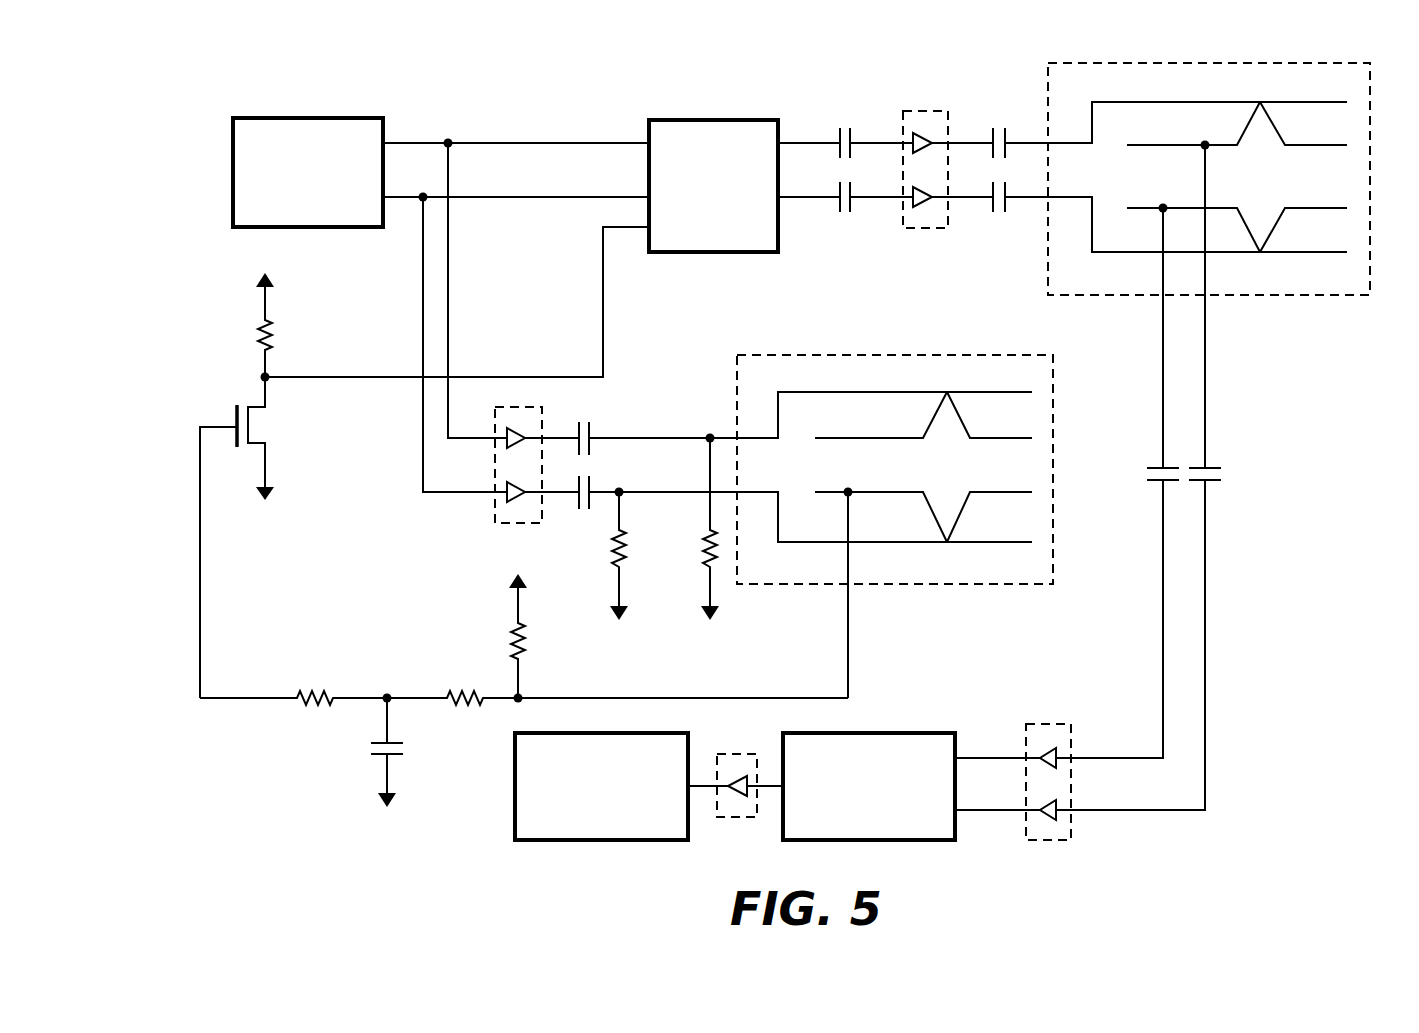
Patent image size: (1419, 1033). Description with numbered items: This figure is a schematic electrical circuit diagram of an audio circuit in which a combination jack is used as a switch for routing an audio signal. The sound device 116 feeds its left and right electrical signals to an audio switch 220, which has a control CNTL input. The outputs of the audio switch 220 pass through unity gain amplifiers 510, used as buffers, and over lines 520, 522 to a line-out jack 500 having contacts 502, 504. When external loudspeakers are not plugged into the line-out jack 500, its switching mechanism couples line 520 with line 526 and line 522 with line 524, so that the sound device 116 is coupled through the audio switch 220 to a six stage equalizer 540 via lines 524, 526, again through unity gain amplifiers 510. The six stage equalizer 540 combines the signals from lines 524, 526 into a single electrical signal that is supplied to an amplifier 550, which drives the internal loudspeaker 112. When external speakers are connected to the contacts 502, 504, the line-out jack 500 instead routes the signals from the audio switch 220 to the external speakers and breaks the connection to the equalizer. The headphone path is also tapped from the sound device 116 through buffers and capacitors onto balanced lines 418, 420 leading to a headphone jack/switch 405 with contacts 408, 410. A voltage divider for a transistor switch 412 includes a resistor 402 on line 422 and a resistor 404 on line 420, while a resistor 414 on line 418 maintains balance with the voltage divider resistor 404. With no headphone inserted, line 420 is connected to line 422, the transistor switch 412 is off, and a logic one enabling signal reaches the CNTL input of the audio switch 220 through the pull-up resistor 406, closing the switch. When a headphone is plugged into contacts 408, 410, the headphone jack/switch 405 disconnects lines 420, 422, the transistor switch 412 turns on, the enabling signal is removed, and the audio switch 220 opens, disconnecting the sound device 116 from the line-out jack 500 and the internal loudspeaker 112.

The sound device 116 is at (372, 118).
The audio switch 220 is at (750, 120).
The unity gain amplifiers 510 is at (925, 111).
The line 520 is at (978, 136).
The line 522 is at (977, 202).
The line-out jack 500 is at (1233, 199).
The contact 502 is at (1347, 100).
The contact 504 is at (1347, 252).
The line 524 is at (1160, 428).
The line 526 is at (1207, 443).
The pull-up resistor 406 is at (268, 340).
The transistor switch 412 is at (237, 410).
The line 418 is at (695, 436).
The line 420 is at (693, 490).
The resistor 404 is at (616, 563).
The resistor 414 is at (708, 563).
The headphone jack/switch 405 is at (921, 486).
The contact 410 is at (1032, 392).
The contact 408 is at (1032, 542).
The line 422 is at (848, 668).
The resistor 402 is at (522, 650).
The internal loudspeaker 112 is at (553, 840).
The amplifier 550 is at (733, 752).
The 6 stage equalizer 540 is at (918, 840).